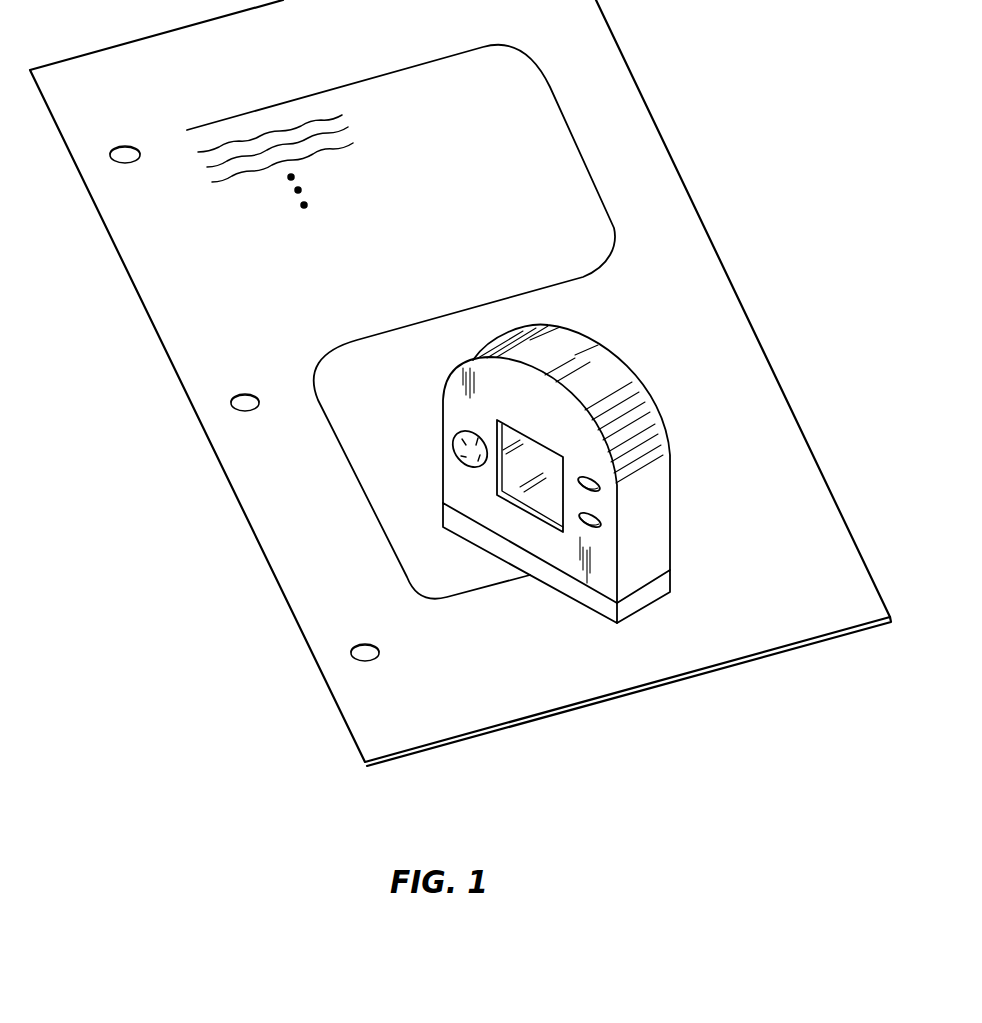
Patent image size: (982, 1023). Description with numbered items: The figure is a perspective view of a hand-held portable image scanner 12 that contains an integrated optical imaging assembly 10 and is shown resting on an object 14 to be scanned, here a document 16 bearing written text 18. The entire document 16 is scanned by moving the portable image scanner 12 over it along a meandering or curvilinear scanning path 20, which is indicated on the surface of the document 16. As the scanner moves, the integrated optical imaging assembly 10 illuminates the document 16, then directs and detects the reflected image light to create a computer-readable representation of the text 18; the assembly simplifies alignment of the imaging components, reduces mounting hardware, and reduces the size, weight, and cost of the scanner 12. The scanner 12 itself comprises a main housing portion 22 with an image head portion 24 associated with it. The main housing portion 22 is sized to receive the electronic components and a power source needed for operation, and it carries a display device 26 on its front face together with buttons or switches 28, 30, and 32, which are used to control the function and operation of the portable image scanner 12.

The integrated optical imaging assembly 10 is at (650, 614).
The portable image scanner 12 is at (628, 348).
The object 14 is at (703, 207).
The document 16 is at (759, 341).
The written text 18 is at (353, 143).
The scanning path 20 is at (365, 495).
The main housing portion 22 is at (672, 442).
The image head portion 24 is at (672, 581).
The display device 26 is at (497, 494).
The button or switch 28 is at (454, 445).
The button or switch 30 is at (601, 484).
The button or switch 32 is at (601, 519).